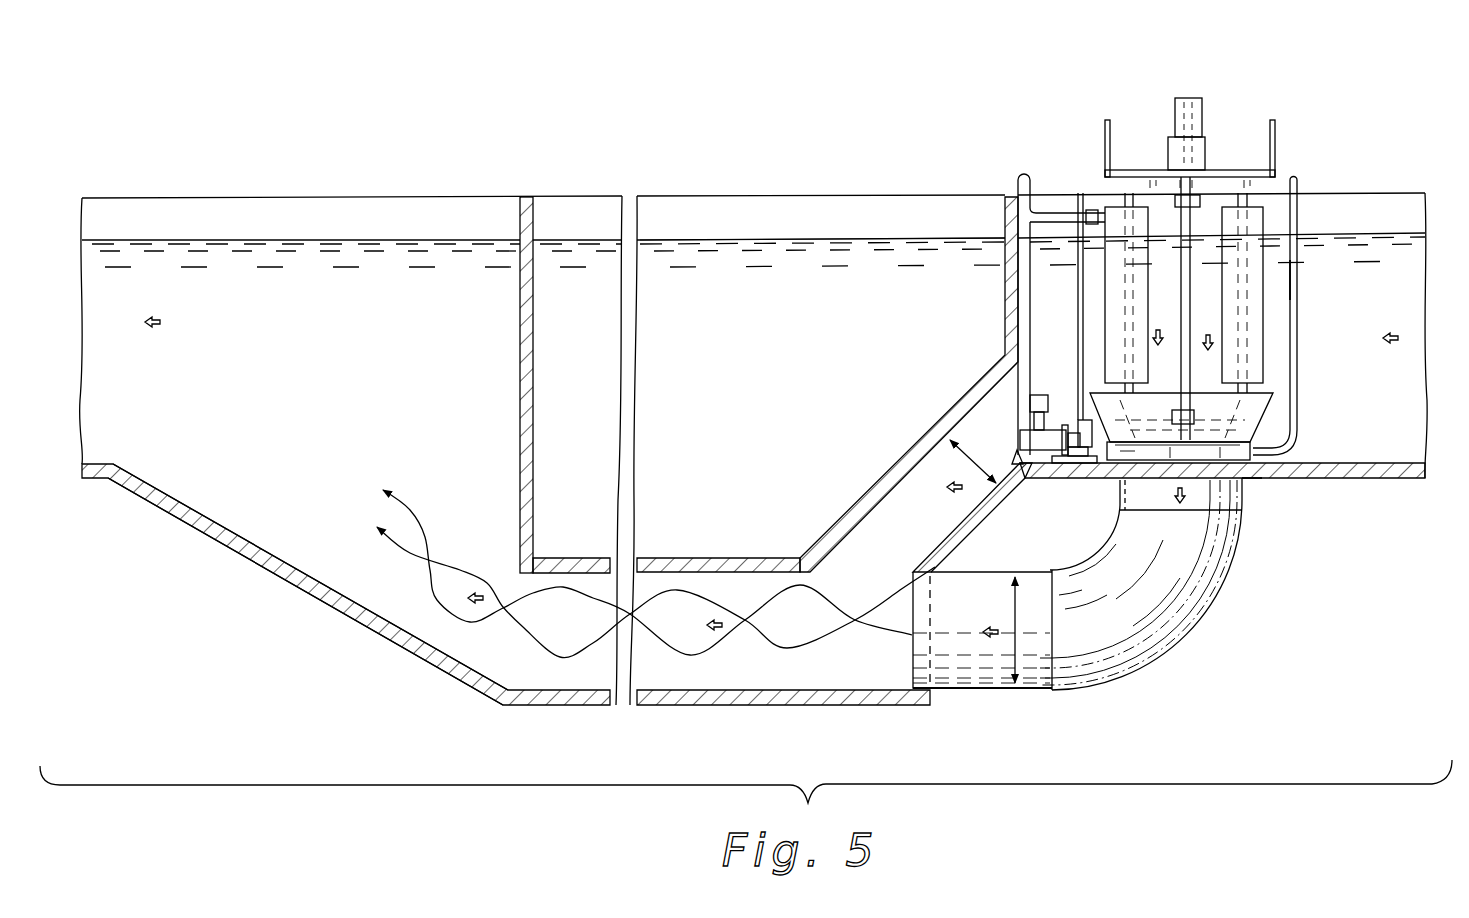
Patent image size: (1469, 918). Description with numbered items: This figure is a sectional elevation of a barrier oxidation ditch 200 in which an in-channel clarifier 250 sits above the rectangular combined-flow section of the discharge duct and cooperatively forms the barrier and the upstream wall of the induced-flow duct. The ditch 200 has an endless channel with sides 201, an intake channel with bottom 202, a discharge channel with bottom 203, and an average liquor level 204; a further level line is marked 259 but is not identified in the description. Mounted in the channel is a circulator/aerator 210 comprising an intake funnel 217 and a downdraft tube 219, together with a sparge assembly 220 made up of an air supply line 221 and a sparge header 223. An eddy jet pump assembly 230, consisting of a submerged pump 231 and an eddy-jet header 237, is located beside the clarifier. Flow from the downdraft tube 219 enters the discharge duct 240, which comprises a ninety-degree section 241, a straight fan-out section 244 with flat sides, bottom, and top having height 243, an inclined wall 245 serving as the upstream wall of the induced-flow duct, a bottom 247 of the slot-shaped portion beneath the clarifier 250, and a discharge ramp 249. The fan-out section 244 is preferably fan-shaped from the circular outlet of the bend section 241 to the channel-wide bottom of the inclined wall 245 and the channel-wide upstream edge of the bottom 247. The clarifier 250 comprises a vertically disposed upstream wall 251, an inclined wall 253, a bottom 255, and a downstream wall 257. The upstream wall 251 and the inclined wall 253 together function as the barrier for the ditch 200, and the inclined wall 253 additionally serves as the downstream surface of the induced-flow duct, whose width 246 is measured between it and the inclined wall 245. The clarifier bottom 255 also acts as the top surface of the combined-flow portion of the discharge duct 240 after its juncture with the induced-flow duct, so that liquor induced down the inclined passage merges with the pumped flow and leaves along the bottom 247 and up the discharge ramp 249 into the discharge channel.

The barrier oxidation ditch 200 is at (487, 190).
The in-channel clarifier 250 is at (882, 188).
The sides 201 is at (1390, 197).
The intake channel bottom 202 is at (1355, 464).
The discharge channel bottom 203 is at (106, 470).
The average liquor level 204 is at (1328, 232).
The liquid level 259 is at (778, 240).
The circulator/aerator 210 is at (1201, 93).
The sparge assembly 220 is at (1295, 168).
The air supply line 221 is at (1298, 278).
The intake funnel 217 is at (1272, 405).
The downdraft tube 219 is at (1125, 495).
The sparge header 223 is at (1263, 480).
The eddy jet pump assembly 230 is at (1056, 380).
The submerged pump 231 is at (1030, 410).
The eddy-jet header 237 is at (1015, 458).
The 90° section 241 is at (1222, 585).
The discharge duct 240 is at (1185, 646).
The height 243 is at (1013, 590).
The straight fan-out section 244 is at (966, 690).
The inclined wall 245 is at (935, 552).
The width 246 is at (892, 474).
The bottom 247 is at (830, 690).
The discharge ramp 249 is at (250, 527).
The upstream wall 251 is at (1003, 240).
The inclined wall 253 is at (905, 455).
The bottom 255 is at (725, 558).
The downstream wall 257 is at (535, 446).